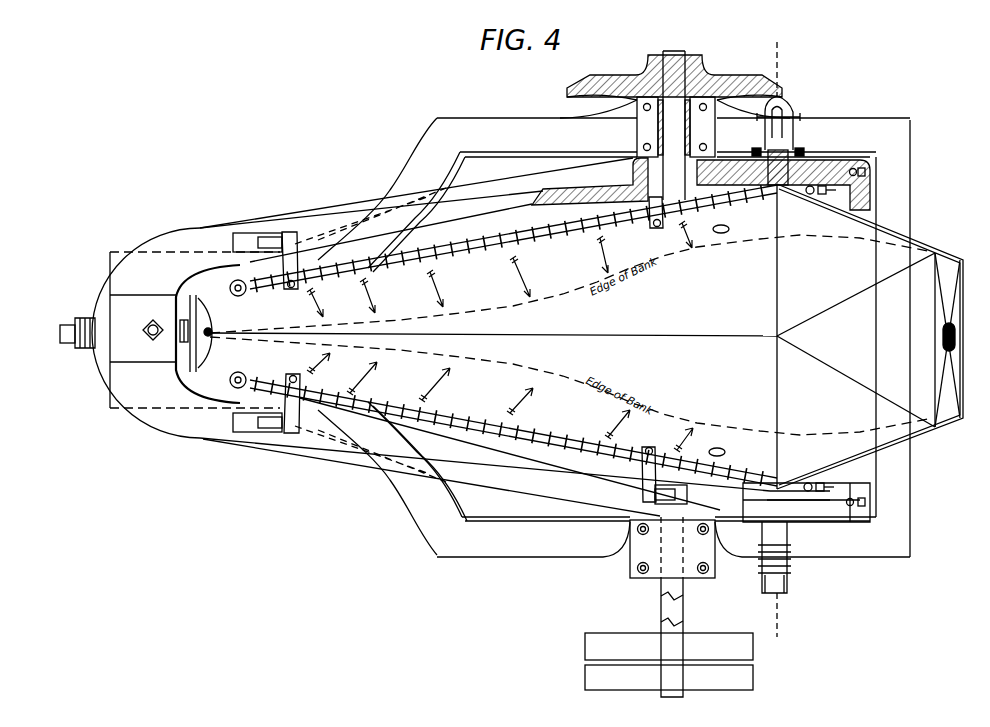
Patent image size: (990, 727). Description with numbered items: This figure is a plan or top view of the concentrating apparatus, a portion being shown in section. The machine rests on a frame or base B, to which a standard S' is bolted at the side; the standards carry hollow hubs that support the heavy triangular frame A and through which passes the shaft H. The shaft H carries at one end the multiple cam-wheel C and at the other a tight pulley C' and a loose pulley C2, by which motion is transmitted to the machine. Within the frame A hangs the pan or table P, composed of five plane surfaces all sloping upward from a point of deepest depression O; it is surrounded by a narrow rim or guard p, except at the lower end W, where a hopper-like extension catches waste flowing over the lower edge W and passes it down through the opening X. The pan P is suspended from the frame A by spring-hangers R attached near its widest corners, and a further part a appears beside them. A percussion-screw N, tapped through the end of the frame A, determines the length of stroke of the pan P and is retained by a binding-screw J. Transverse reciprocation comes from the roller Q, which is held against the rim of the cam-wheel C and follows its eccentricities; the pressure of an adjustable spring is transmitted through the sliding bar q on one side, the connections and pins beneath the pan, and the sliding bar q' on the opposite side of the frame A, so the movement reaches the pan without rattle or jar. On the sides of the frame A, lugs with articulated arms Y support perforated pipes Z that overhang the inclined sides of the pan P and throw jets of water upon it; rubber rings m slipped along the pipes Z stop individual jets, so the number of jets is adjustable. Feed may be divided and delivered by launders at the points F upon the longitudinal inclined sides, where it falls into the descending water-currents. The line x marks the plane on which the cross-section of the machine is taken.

The percussion-screw N is at (59, 333).
The binding-screw J is at (145, 332).
The rim or guard p is at (211, 329).
The articulated arms Y is at (460, 350).
The pipes Z is at (513, 335).
The rings m is at (530, 343).
The feed points F is at (712, 339).
The pan or table P is at (777, 336).
The point of deepest depression O is at (868, 340).
The lower end or edge of pan W is at (919, 341).
The opening X is at (955, 340).
The triangular frame A is at (653, 340).
The frame or base B is at (602, 337).
The multiple cam-wheel C is at (675, 86).
The shaft H is at (692, 590).
The standard S' is at (702, 127).
The roller Q is at (793, 100).
The sliding bar q is at (778, 156).
The sliding bar q' is at (780, 560).
The section line x is at (773, 341).
The spring-hangers R is at (820, 331).
The bolt a is at (850, 339).
The tight pulley C' is at (669, 646).
The loose pulley C2 is at (669, 677).